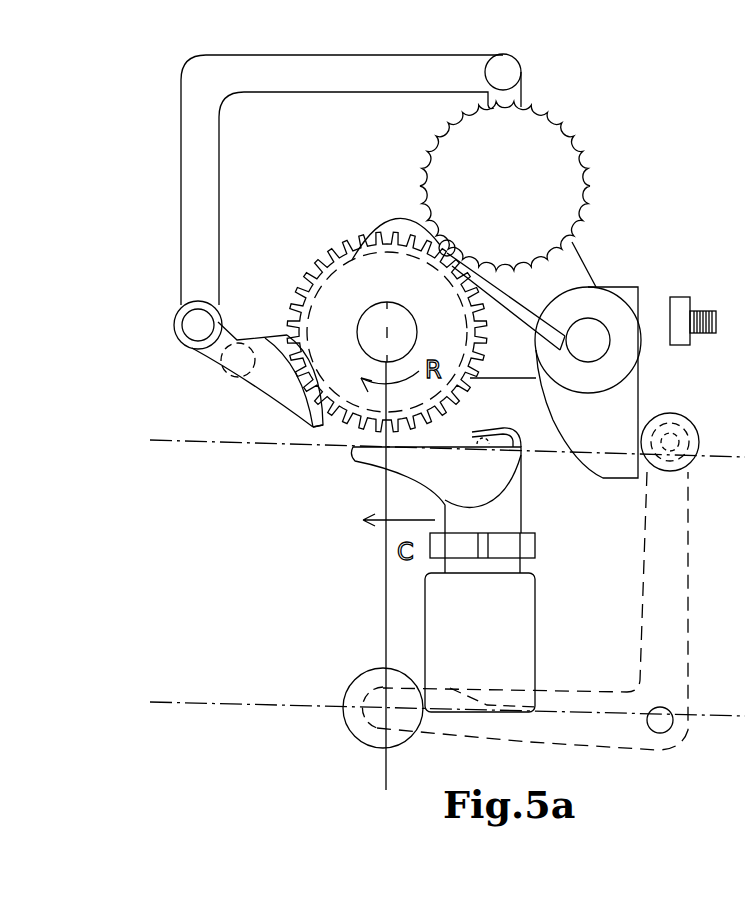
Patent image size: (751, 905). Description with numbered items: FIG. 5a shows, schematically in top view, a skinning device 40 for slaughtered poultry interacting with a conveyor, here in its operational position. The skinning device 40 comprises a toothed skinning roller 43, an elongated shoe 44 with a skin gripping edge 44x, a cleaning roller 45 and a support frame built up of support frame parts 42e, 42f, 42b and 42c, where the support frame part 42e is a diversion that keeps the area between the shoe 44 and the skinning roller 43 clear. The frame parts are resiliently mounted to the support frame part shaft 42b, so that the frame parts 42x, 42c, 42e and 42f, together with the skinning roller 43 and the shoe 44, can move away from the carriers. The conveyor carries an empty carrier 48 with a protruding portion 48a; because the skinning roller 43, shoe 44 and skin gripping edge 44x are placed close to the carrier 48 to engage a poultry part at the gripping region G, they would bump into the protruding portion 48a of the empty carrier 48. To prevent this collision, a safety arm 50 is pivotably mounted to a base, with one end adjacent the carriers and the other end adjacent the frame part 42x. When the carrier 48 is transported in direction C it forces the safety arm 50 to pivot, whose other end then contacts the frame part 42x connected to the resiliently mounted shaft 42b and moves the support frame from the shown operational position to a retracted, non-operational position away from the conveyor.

The skinning device 40 is at (617, 127).
The support frame part 42e is at (220, 204).
The support frame part shaft 42b is at (590, 338).
The support frame part 42c is at (458, 284).
The frame part 42x is at (554, 360).
The support frame part 42f is at (212, 348).
The toothed skinning roller 43 is at (387, 332).
The elongated shoe 44 is at (258, 388).
The skin gripping edge 44x is at (345, 432).
The cleaning roller 45 is at (505, 186).
The carrier 48 is at (443, 579).
The protruding portion 48a is at (486, 430).
The safety arm 50 is at (670, 612).
The engagement point G is at (330, 418).